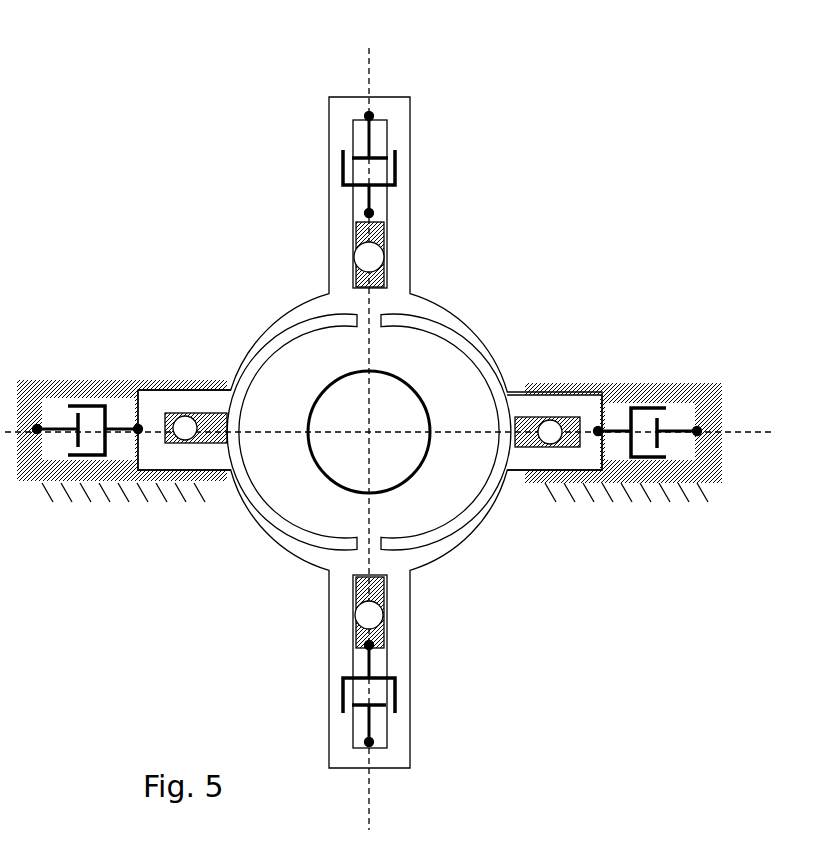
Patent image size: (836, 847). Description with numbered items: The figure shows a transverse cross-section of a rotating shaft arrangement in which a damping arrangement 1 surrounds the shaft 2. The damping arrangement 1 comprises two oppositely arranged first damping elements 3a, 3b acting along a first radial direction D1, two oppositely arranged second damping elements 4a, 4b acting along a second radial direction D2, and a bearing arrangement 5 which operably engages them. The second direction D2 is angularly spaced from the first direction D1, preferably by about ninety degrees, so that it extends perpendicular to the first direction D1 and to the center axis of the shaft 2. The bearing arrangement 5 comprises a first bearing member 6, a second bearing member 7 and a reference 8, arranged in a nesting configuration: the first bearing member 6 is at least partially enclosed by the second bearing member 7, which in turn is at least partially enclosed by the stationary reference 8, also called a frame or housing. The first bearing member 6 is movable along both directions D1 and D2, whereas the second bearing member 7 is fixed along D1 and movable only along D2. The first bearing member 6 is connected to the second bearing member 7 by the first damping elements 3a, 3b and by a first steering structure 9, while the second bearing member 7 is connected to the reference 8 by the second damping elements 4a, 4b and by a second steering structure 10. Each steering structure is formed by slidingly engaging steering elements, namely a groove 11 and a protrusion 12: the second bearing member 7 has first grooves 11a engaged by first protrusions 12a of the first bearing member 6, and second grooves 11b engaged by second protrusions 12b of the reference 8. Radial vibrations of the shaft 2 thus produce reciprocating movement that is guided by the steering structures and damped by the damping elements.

The damping arrangement 1 is at (141, 158).
The shaft 2 is at (385, 403).
The first damping element 3a is at (373, 170).
The first damping element 3b is at (377, 692).
The second damping element 4a is at (90, 420).
The second damping element 4b is at (643, 422).
The bearing arrangement 5 is at (504, 318).
The first bearing member 6 is at (313, 493).
The second bearing member 7 is at (296, 555).
The reference 8 is at (102, 390).
The first steering structure 9 is at (394, 257).
The second steering structure 10 is at (193, 453).
The groove 11 is at (380, 439).
The first groove 11a is at (377, 207).
The second groove 11b is at (217, 413).
The protrusion 12 is at (371, 434).
The first protrusion 12a is at (356, 255).
The second protrusion 12b is at (185, 440).
The first direction D1 is at (372, 79).
The second direction D2 is at (745, 428).